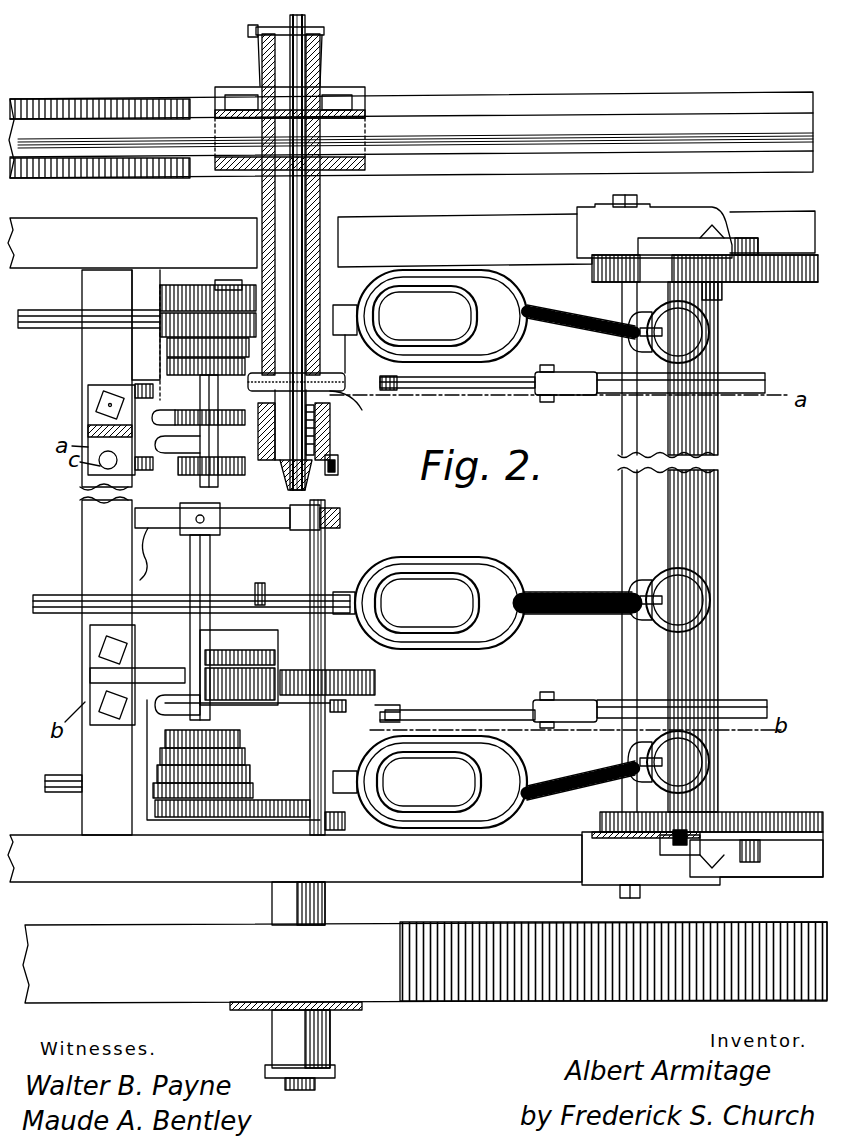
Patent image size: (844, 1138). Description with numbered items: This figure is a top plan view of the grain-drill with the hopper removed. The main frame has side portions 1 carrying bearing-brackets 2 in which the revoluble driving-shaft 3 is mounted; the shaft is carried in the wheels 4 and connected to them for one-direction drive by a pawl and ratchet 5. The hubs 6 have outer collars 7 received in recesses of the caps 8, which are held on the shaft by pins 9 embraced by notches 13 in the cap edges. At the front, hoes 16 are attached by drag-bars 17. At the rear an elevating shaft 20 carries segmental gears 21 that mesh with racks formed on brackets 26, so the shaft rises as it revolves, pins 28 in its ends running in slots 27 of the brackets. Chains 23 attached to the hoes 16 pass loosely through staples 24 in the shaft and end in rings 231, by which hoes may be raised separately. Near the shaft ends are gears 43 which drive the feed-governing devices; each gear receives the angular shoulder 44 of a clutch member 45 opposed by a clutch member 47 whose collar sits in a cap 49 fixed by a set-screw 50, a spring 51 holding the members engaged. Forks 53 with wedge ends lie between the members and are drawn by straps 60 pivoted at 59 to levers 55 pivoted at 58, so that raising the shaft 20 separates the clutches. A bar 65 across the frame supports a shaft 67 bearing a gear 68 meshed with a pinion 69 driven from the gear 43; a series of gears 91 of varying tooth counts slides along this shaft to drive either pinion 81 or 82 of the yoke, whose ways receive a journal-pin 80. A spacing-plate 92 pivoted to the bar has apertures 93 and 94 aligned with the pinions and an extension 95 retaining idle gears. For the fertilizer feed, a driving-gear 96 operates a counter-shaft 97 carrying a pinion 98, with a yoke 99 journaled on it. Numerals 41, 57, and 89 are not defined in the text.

The side portions 1 is at (411, 546).
The bearing-brackets 2 is at (318, 220).
The driving-shaft 3 is at (296, 1102).
The wheels 4 is at (415, 178).
The pawl and ratchet 5 is at (350, 97).
The hubs 6 is at (240, 108).
The collars 7 is at (320, 72).
The caps 8 is at (322, 50).
The pins 9 is at (256, 28).
The notches 13 is at (330, 1062).
The hoes 16 is at (430, 549).
The drag-bars 17 is at (50, 328).
The shaft 20 is at (718, 675).
The segmental gears 21 is at (605, 282).
The chains 23 is at (579, 561).
The staples 24 is at (630, 345).
The brackets 26 is at (702, 848).
The slots 27 is at (745, 848).
The pins 28 is at (672, 852).
The arm 41 is at (322, 402).
The gears 43 is at (340, 822).
The angular shoulder 44 is at (347, 340).
The clutch member 45 is at (388, 390).
The clutch member 47 is at (378, 706).
The cap 49 is at (331, 445).
The set-screw 50 is at (344, 466).
The spring 51 is at (325, 425).
The forks 53 is at (398, 728).
The levers 55 is at (742, 393).
The plate 57 is at (285, 383).
The pivot 58 is at (578, 395).
The pivot 59 is at (545, 399).
The straps 60 is at (464, 388).
The bar 65 is at (210, 552).
The shaft 67 is at (218, 480).
The gear 68 is at (228, 285).
The pinion 69 is at (546, 694).
The journal-pin 80 is at (178, 707).
The pinion 81 is at (240, 660).
The pinion 82 is at (240, 684).
The bar 89 is at (195, 672).
The gears 91 is at (180, 340).
The spacing-plate 92 is at (147, 432).
The aperture 93 is at (200, 455).
The aperture 94 is at (178, 420).
The extension 95 is at (159, 424).
The driving-gear 96 is at (225, 800).
The counter-shaft 97 is at (312, 600).
The pinion 98 is at (365, 680).
The yoke 99 is at (148, 720).
The rings 231 is at (712, 338).